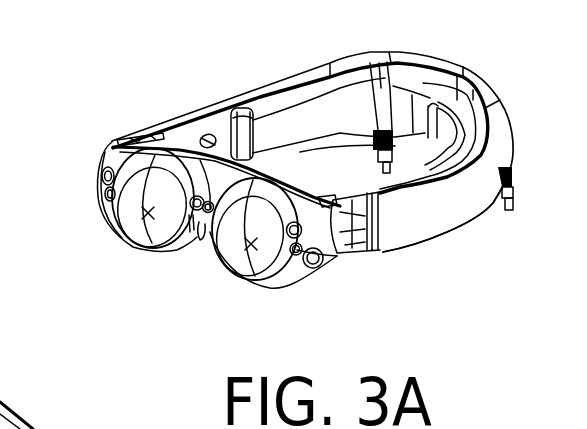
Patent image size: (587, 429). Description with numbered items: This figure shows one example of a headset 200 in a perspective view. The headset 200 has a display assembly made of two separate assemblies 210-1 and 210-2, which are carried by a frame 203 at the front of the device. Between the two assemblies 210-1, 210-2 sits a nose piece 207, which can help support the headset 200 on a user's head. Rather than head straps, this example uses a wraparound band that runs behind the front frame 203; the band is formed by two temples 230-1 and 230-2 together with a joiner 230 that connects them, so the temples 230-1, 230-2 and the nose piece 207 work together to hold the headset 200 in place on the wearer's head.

The headset 200 is at (84, 84).
The frame 203 is at (269, 163).
The nose piece 207 is at (201, 236).
The display assembly 210-1 is at (273, 257).
The display assembly 210-2 is at (131, 215).
The joiner 230 is at (462, 72).
The temple 230-1 is at (410, 221).
The temple 230-2 is at (217, 125).